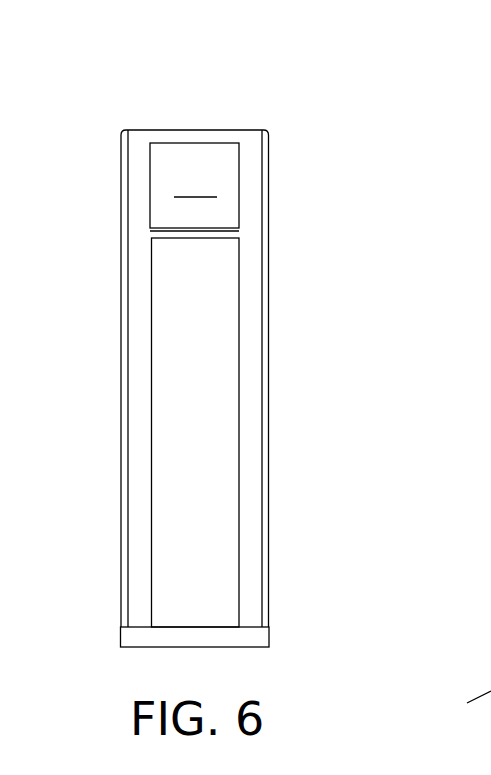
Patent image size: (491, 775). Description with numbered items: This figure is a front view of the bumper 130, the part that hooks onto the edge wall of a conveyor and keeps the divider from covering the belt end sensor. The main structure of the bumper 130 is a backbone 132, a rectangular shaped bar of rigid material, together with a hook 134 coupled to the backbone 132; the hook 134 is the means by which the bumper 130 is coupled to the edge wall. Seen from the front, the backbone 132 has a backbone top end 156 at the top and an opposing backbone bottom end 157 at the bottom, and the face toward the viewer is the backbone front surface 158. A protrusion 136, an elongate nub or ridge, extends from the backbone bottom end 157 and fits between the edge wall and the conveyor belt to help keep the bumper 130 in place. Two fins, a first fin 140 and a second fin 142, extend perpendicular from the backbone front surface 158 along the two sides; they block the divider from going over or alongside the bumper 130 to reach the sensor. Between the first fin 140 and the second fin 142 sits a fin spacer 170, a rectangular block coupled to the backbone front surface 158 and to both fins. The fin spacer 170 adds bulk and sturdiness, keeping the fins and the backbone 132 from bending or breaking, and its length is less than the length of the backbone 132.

The bumper 130 is at (233, 348).
The backbone 132 is at (220, 213).
The hook 134 is at (459, 706).
The protrusion 136 is at (138, 633).
The first fin 140 is at (138, 412).
The second fin 142 is at (250, 413).
The backbone top end 156 is at (275, 155).
The backbone bottom end 157 is at (210, 603).
The backbone front surface 158 is at (194, 185).
The fin spacer 170 is at (271, 432).